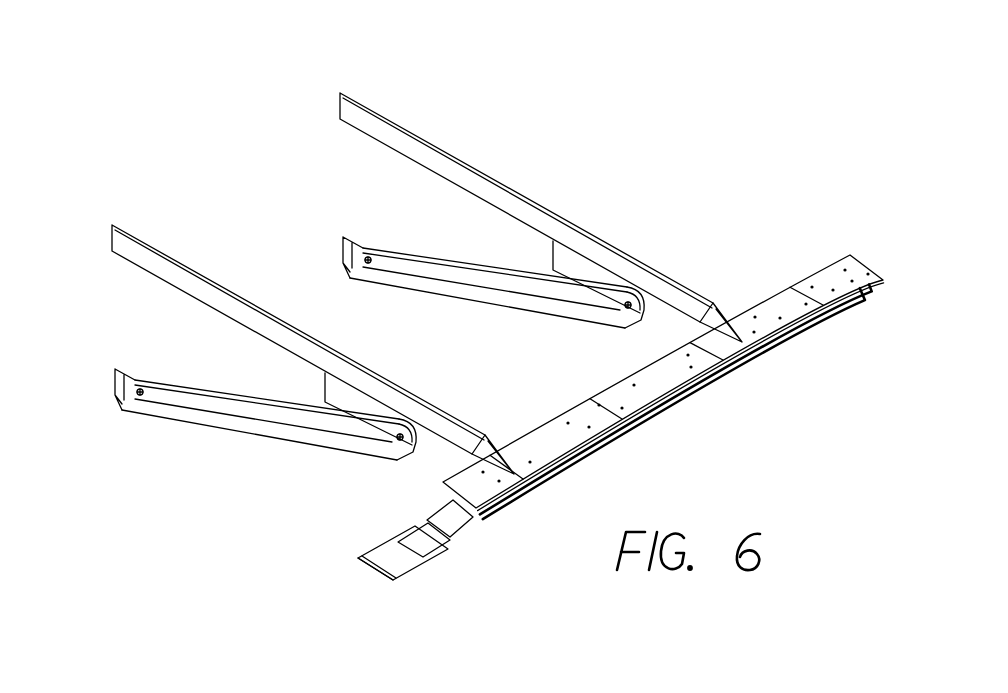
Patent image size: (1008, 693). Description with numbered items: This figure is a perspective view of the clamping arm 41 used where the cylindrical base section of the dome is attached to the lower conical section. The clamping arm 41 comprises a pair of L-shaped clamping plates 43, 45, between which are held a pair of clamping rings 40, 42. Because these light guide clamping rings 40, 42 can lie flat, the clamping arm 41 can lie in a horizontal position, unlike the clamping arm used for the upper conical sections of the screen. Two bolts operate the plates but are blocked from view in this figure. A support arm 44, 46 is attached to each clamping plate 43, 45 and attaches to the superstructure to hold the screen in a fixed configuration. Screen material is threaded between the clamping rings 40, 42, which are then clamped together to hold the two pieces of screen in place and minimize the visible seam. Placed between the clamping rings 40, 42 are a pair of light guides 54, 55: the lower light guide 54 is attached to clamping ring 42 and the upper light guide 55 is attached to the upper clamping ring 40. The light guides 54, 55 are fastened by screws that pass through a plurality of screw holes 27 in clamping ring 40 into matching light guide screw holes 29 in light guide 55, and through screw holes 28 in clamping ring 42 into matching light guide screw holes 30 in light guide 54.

The screw holes 27 is at (617, 412).
The screw holes 28 is at (395, 562).
The light guide screw holes 29 is at (443, 520).
The light guide screw holes 30 is at (432, 545).
The clamping ring 40 is at (567, 435).
The clamping arm 41 is at (427, 256).
The clamping ring 42 is at (380, 553).
The clamping plate 43 is at (535, 182).
The support arm 44 is at (467, 293).
The clamping plate 45 is at (560, 260).
The support arm 46 is at (355, 250).
The lower light guide 54 is at (430, 545).
The upper light guide 55 is at (468, 525).